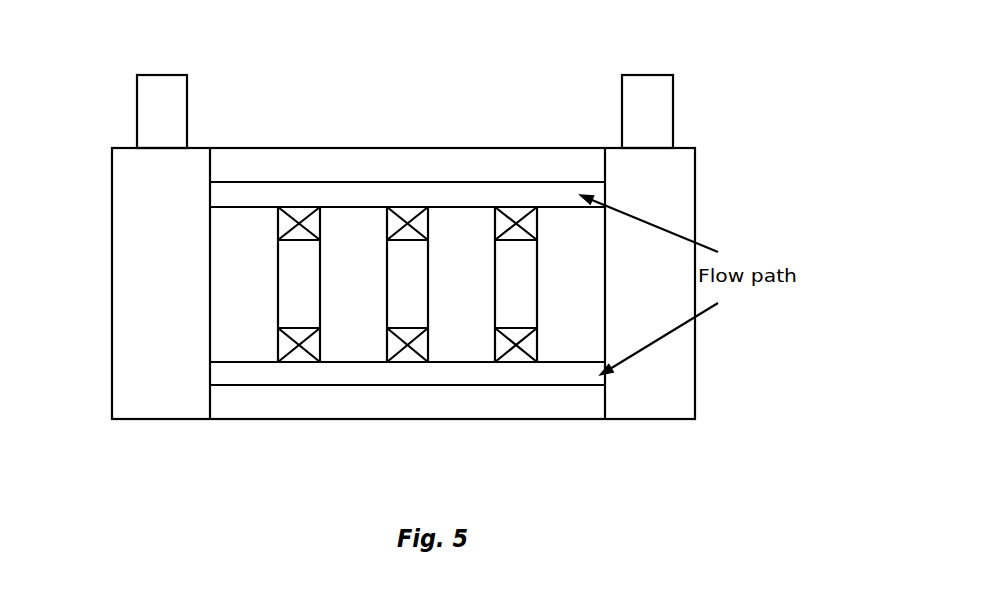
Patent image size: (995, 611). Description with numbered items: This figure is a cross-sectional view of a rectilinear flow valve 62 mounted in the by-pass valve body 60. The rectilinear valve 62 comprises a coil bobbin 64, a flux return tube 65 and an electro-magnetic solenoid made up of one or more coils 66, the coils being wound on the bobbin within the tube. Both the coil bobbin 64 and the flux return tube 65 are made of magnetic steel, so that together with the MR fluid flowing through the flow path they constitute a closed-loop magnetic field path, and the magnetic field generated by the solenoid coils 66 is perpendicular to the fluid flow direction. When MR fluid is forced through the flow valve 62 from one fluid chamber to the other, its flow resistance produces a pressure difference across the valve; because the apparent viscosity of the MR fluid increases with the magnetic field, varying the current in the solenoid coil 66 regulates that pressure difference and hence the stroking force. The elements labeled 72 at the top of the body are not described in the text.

The by-pass valve body 60 is at (131, 434).
The rectilinear flow valve 62 is at (256, 380).
The coil bobbin 64 is at (574, 344).
The flux return tube 65 is at (374, 414).
The solenoid coils 66 is at (513, 196).
The terminal 72 is at (200, 70).